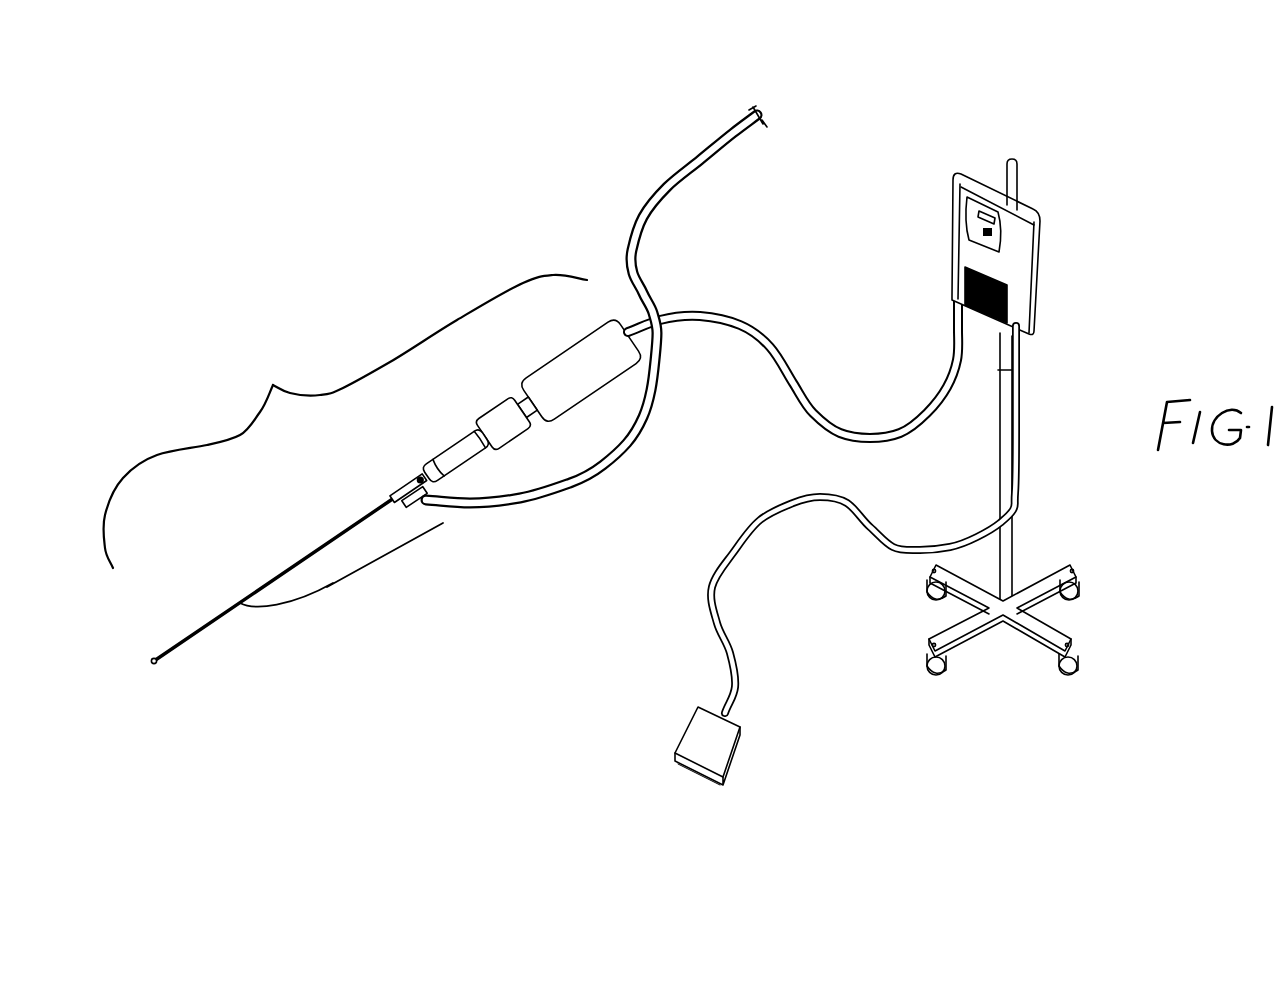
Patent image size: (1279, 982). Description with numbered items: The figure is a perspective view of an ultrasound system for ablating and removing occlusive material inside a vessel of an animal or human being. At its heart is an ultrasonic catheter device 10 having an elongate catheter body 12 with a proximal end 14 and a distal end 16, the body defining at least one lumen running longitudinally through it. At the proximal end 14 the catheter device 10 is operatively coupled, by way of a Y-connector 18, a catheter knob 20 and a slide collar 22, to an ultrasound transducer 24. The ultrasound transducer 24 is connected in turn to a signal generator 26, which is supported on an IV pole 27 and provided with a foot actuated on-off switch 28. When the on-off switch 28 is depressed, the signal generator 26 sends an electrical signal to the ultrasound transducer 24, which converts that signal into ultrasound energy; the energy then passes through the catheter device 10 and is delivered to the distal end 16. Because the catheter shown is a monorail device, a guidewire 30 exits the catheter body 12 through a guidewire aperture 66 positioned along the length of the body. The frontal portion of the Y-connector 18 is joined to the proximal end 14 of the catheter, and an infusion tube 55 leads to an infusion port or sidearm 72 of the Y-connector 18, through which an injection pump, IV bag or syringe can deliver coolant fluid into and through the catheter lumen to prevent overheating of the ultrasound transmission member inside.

The ultrasonic catheter device 10 is at (345, 421).
The catheter body 12 is at (218, 617).
The proximal end 14 is at (367, 512).
The distal end 16 is at (148, 655).
The Y-connector 18 is at (398, 495).
The catheter knob 20 is at (460, 463).
The slide collar 22 is at (490, 412).
The ultrasound transducer 24 is at (571, 363).
The signal generator 26 is at (953, 218).
The IV pole 27 is at (1017, 172).
The foot actuated on-off switch 28 is at (715, 750).
The guidewire 30 is at (352, 575).
The infusion tube 55 is at (710, 140).
The guidewire aperture 66 is at (243, 605).
The infusion port or sidearm 72 is at (406, 505).